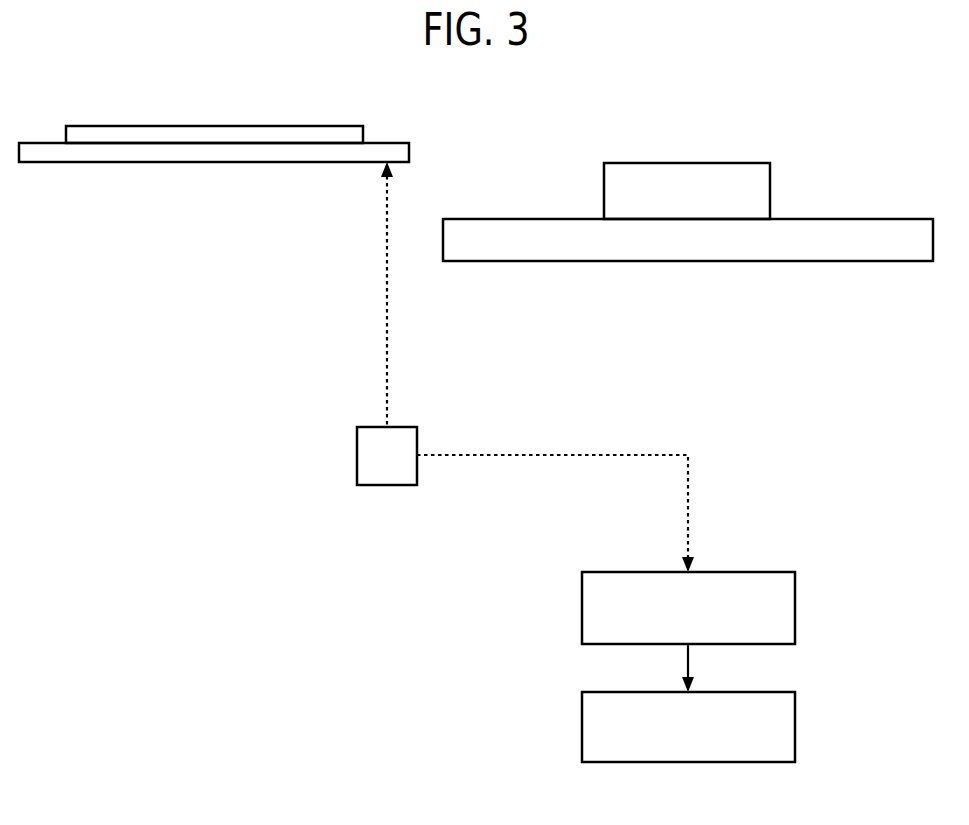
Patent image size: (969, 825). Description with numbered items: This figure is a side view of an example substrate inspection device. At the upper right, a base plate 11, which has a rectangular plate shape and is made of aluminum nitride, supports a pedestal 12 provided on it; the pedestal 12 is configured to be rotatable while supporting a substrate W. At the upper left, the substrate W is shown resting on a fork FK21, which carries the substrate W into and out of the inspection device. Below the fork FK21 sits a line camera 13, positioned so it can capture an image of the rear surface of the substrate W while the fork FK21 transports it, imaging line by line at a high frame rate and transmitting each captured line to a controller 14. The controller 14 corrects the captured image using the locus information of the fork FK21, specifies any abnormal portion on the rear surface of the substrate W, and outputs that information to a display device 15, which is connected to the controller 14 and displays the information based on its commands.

The substrate W is at (139, 126).
The fork FK21 is at (138, 162).
The pedestal 12 is at (686, 163).
The base plate 11 is at (827, 261).
The line camera 13 is at (385, 485).
The controller 14 is at (728, 572).
The display device 15 is at (728, 692).